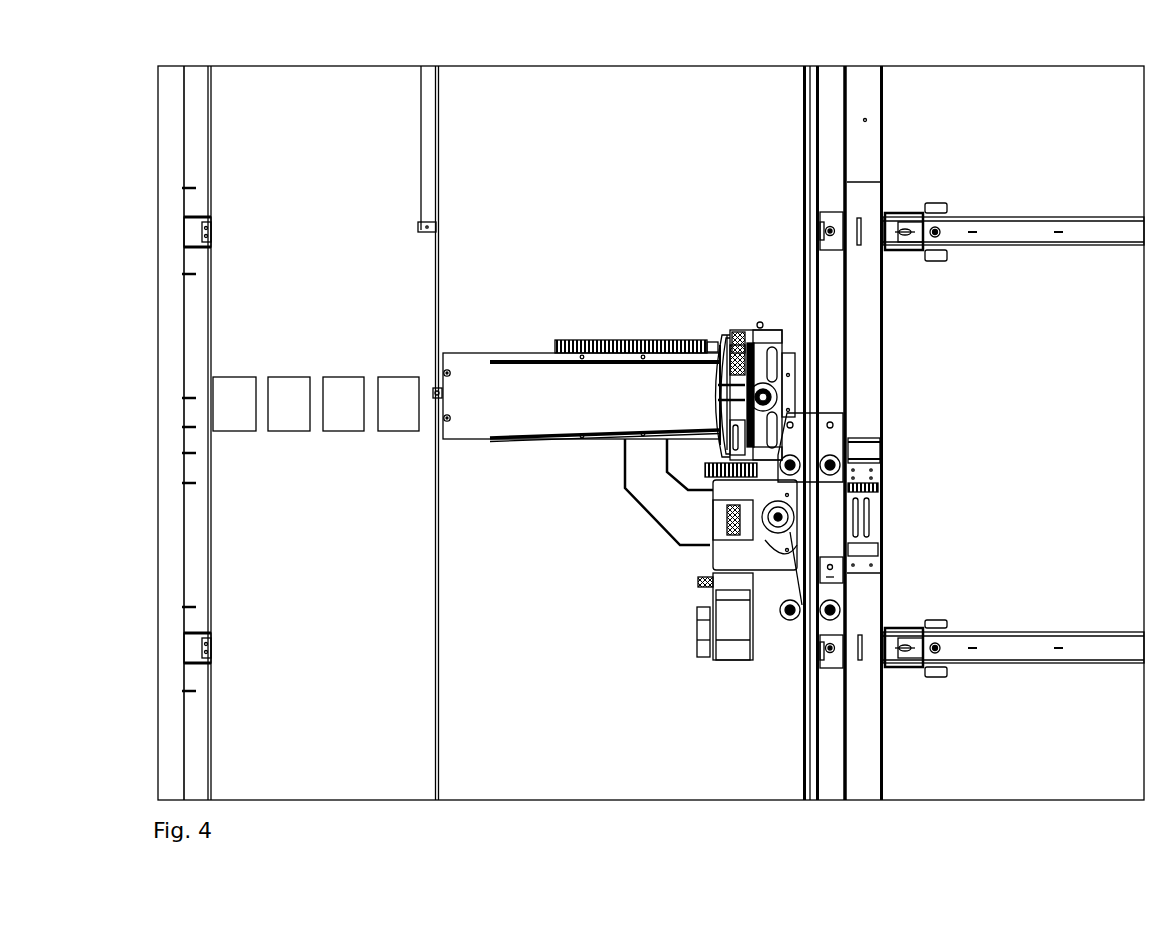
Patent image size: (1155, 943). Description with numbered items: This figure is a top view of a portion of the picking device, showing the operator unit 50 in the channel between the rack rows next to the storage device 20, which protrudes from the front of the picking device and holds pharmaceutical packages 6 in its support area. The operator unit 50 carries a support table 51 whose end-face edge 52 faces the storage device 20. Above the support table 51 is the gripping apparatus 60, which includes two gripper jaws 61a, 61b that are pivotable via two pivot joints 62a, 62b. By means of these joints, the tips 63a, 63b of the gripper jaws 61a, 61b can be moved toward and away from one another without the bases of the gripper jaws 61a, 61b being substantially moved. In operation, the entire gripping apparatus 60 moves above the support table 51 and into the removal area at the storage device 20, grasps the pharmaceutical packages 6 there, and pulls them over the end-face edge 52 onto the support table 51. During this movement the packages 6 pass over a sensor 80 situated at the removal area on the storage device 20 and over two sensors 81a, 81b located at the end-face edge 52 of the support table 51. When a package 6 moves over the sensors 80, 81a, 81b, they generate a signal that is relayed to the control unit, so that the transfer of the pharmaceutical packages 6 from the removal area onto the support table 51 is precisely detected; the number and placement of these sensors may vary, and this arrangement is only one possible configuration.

The pharmaceutical packages 6 is at (398, 402).
The storage device 20 is at (312, 125).
The operator unit 50 is at (916, 438).
The support table 51 is at (645, 388).
The end-face edge 52 is at (802, 157).
The gripping apparatus 60 is at (716, 300).
The gripper jaw 61a is at (555, 342).
The gripper jaw 61b is at (607, 437).
The pivot joint 62a is at (750, 335).
The pivot joint 62b is at (700, 493).
The tip of gripper jaw 63a is at (492, 360).
The tip of gripper jaw 63b is at (490, 440).
The sensor 80 is at (437, 397).
The sensor 81a is at (450, 370).
The sensor 81b is at (449, 422).